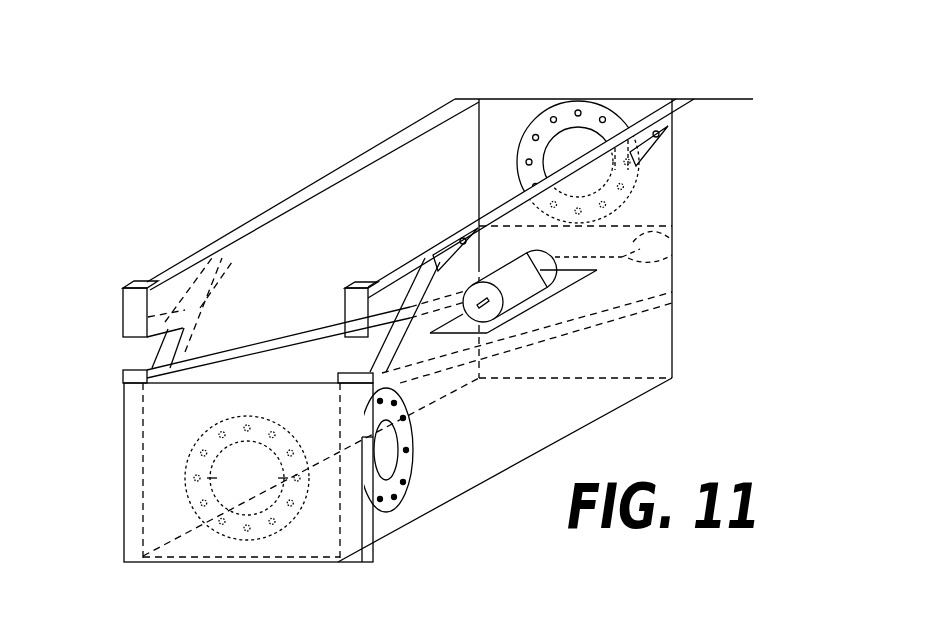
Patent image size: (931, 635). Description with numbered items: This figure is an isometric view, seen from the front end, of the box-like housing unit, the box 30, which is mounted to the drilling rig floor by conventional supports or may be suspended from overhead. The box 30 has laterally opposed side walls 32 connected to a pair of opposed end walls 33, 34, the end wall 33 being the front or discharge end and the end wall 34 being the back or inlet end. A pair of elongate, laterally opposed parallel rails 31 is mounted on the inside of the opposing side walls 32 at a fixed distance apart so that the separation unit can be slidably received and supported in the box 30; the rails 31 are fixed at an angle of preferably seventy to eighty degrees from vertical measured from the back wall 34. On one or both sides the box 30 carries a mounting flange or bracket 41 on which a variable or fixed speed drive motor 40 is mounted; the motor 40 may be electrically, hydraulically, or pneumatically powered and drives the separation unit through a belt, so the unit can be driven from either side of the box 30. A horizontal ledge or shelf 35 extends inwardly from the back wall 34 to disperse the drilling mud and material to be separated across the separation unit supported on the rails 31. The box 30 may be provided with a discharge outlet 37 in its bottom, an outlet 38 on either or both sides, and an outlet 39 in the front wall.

The box 30 is at (336, 160).
The parallel rails 31 is at (247, 346).
The side walls 32 is at (647, 205).
The end wall 33 is at (160, 437).
The end wall 34 is at (667, 167).
The ledge or shelf 35 is at (640, 236).
The discharge outlet 37 is at (467, 463).
The outlet 38 is at (384, 448).
The outlet 39 is at (215, 478).
The drive motor 40 is at (592, 302).
The mounting flange or bracket 41 is at (597, 270).